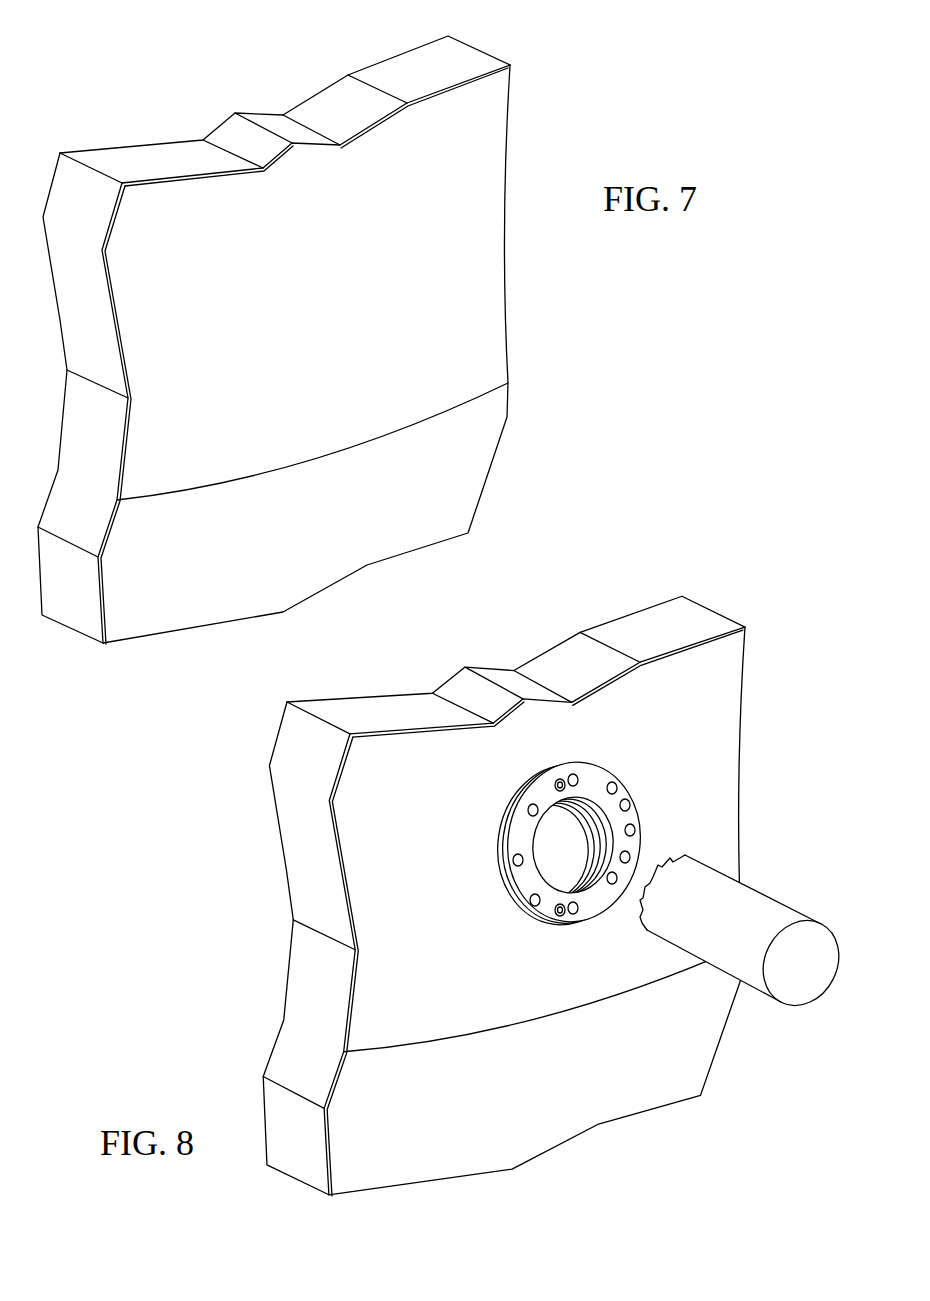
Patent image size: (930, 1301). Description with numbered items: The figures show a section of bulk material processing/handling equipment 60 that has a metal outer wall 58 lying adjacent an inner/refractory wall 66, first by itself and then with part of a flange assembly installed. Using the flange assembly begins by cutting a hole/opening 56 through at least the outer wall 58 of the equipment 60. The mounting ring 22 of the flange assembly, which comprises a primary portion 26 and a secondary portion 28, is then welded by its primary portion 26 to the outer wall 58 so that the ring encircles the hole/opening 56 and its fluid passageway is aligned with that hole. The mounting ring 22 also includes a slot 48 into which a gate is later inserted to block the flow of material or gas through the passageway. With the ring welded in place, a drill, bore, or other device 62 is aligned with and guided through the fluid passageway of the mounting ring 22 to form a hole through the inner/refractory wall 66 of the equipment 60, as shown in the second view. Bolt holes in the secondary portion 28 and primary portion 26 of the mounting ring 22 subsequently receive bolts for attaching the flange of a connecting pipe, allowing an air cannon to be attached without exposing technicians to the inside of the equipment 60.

In FIG. 8, the mounting ring 22 is at (518, 854).
In FIG. 8, the primary portion 26 is at (530, 778).
In FIG. 8, the secondary portion 28 is at (590, 780).
In FIG. 8, the slot 48 is at (489, 834).
In FIG. 8, the hole/opening 56 is at (580, 872).
In FIG. 7, the outer wall 58 is at (483, 122).
In FIG. 8, the outer wall 58 is at (348, 805).
In FIG. 7, the bulk material processing/handling equipment 60 is at (618, 311).
In FIG. 8, the bulk material processing/handling equipment 60 is at (725, 668).
In FIG. 8, the drill, bore, or other device 62 is at (758, 920).
In FIG. 7, the inner/refractory wall 66 is at (455, 62).
In FIG. 8, the inner/refractory wall 66 is at (297, 753).